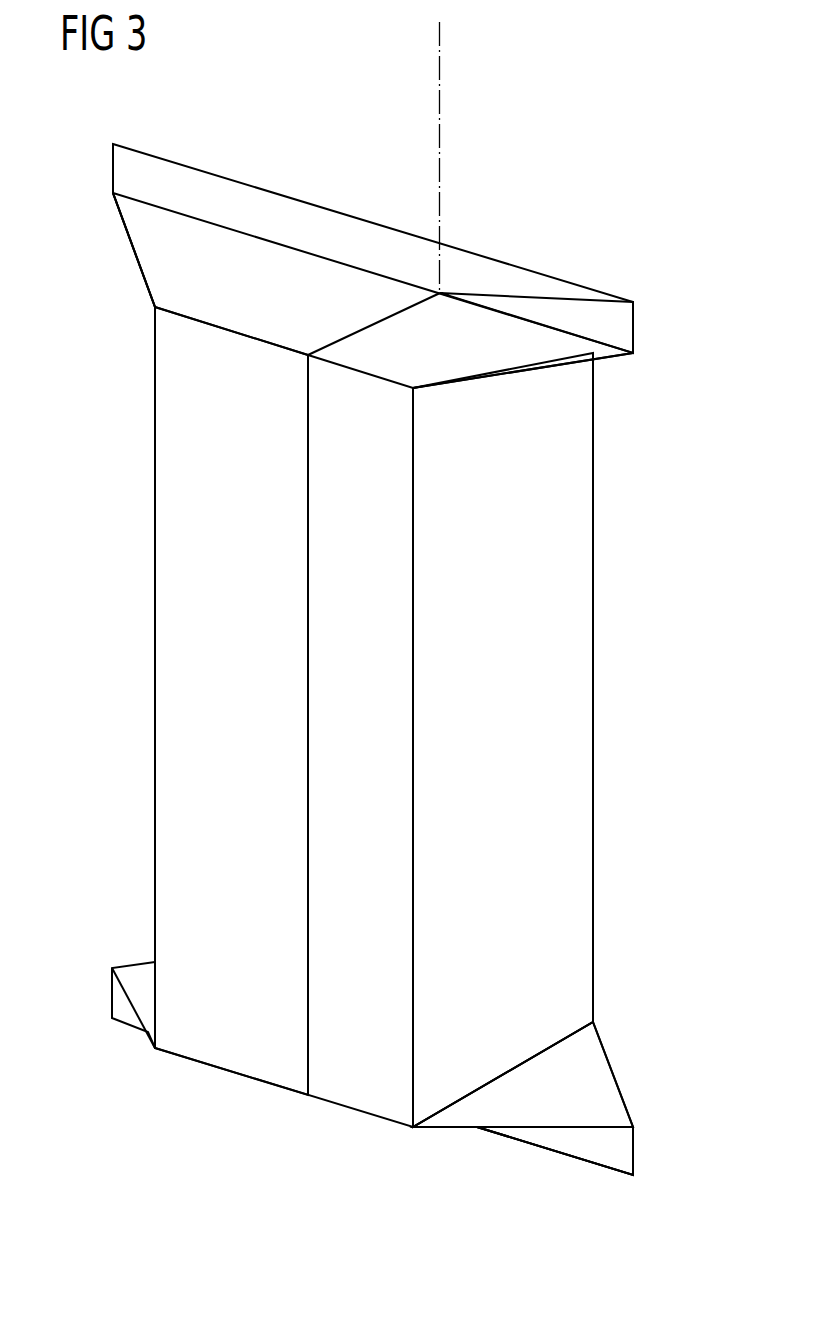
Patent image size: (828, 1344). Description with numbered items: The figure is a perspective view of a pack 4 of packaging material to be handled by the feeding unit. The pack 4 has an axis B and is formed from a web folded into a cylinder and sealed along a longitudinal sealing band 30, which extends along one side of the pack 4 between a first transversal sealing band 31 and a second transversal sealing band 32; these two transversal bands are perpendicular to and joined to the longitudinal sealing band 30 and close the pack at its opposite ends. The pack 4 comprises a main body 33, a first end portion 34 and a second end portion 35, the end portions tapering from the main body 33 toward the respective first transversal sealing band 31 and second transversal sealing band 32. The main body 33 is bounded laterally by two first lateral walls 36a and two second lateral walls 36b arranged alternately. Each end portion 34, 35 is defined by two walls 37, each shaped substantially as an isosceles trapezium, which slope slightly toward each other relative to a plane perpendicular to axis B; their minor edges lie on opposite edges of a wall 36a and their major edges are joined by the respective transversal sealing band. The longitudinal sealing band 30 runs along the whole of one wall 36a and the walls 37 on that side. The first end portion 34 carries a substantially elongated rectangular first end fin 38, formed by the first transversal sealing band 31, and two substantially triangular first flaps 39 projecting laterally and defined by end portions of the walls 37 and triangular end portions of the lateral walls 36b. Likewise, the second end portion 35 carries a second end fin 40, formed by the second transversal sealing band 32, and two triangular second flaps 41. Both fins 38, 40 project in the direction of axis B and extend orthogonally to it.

The pack 4 is at (612, 233).
The longitudinal sealing band 30 is at (308, 727).
The first transversal sealing band 31 is at (336, 187).
The second transversal sealing band 32 is at (531, 1176).
The main body 33 is at (168, 590).
The first end portion 34 is at (122, 298).
The second end portion 35 is at (630, 1024).
The first lateral wall 36a is at (176, 780).
The second lateral wall 36b is at (578, 757).
The wall 37 is at (151, 250).
The first end fin 38 is at (508, 287).
The first flap 39 is at (517, 372).
The second end fin 40 is at (597, 1150).
The second flap 41 is at (130, 972).
The axis B is at (441, 125).